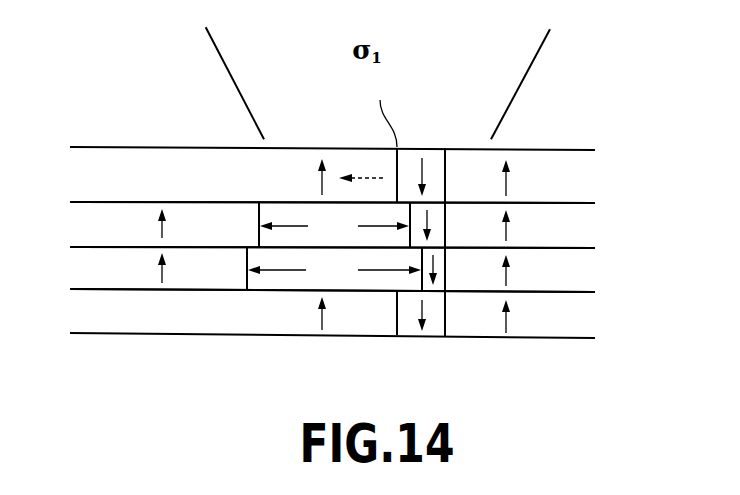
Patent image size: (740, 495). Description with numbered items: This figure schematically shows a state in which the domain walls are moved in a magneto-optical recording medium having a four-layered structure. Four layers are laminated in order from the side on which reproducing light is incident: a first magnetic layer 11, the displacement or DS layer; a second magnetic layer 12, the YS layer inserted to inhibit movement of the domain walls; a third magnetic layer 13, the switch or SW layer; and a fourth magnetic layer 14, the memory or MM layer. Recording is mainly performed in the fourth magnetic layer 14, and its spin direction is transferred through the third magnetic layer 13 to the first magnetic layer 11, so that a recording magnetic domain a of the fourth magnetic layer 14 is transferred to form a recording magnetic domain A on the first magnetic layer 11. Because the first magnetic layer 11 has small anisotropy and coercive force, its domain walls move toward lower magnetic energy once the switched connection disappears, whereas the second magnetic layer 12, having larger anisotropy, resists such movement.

The first magnetic layer 11 is at (583, 173).
The second magnetic layer 12 is at (583, 226).
The third magnetic layer 13 is at (583, 272).
The fourth magnetic layer 14 is at (583, 319).
The recording magnetic domain A is at (433, 147).
The recording magnetic domain a is at (408, 330).